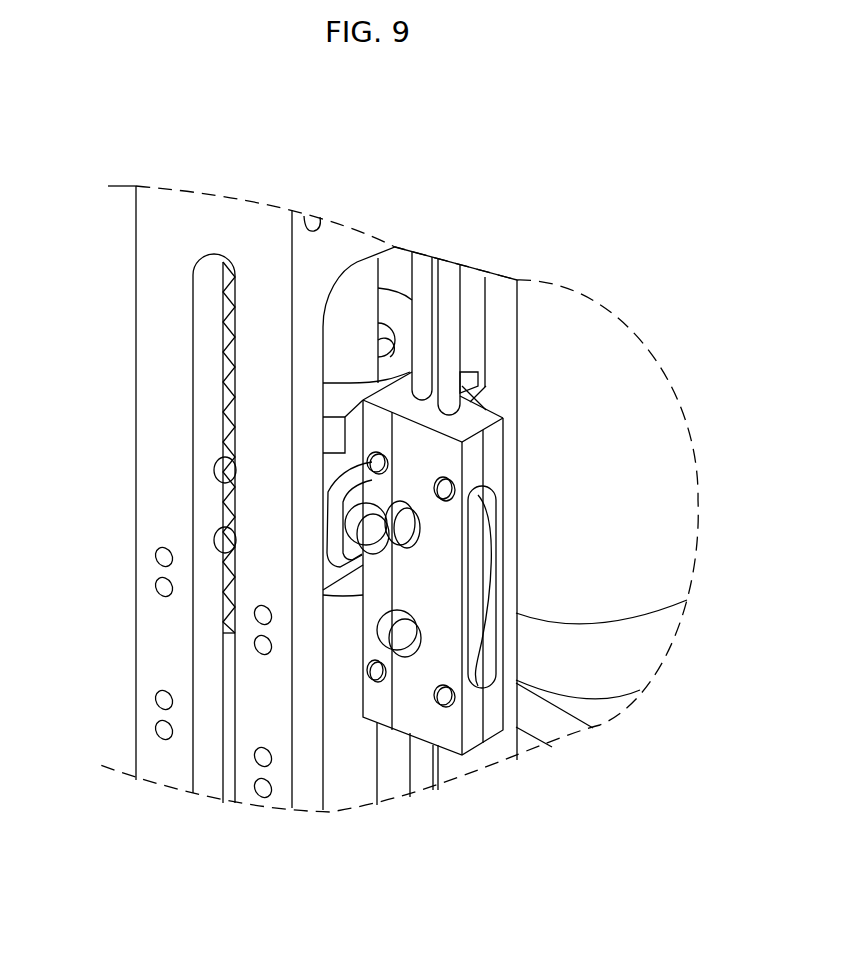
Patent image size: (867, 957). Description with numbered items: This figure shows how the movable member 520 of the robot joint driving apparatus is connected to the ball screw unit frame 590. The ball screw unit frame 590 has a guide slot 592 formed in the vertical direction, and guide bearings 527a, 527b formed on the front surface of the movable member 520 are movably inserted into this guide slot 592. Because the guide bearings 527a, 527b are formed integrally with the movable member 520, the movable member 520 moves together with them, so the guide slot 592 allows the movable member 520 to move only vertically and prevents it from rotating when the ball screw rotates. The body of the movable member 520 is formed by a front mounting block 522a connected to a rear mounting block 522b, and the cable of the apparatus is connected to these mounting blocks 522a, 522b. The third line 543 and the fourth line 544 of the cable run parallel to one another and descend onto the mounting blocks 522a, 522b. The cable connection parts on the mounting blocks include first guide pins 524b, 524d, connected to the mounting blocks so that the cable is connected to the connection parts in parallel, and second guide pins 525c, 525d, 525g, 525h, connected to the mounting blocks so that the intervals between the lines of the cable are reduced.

The ball screw unit frame 590 is at (114, 281).
The guide slot 592 is at (207, 372).
The guide bearing 527a is at (216, 463).
The guide bearing 527b is at (216, 540).
The third line 543 is at (417, 288).
The fourth line 544 is at (460, 300).
The movable member 520 is at (507, 737).
The front mounting block 522a is at (450, 428).
The rear mounting block 522b is at (472, 397).
The second guide pin 525c is at (385, 462).
The second guide pin 525d is at (452, 487).
The second guide pin 525g is at (373, 677).
The second guide pin 525h is at (440, 705).
The first guide pin 524b is at (412, 532).
The first guide pin 524d is at (398, 650).